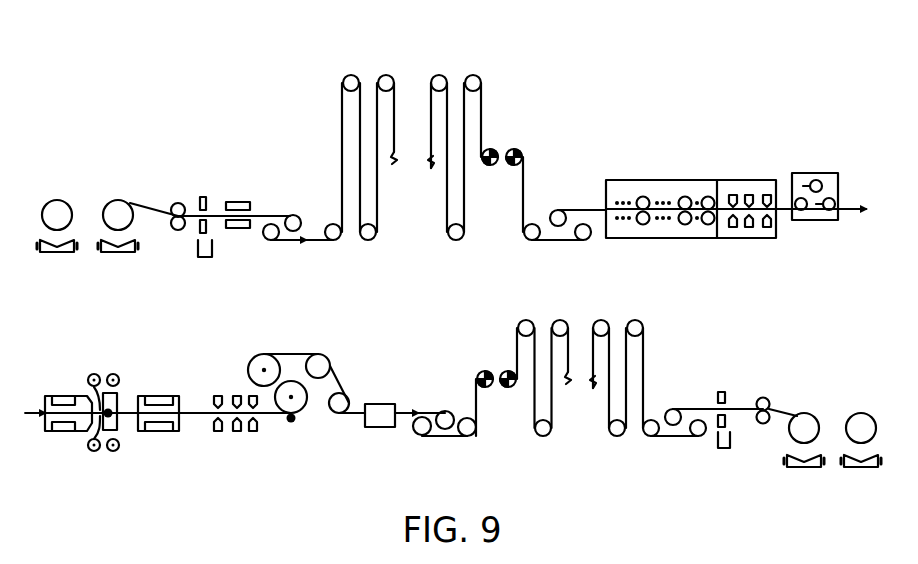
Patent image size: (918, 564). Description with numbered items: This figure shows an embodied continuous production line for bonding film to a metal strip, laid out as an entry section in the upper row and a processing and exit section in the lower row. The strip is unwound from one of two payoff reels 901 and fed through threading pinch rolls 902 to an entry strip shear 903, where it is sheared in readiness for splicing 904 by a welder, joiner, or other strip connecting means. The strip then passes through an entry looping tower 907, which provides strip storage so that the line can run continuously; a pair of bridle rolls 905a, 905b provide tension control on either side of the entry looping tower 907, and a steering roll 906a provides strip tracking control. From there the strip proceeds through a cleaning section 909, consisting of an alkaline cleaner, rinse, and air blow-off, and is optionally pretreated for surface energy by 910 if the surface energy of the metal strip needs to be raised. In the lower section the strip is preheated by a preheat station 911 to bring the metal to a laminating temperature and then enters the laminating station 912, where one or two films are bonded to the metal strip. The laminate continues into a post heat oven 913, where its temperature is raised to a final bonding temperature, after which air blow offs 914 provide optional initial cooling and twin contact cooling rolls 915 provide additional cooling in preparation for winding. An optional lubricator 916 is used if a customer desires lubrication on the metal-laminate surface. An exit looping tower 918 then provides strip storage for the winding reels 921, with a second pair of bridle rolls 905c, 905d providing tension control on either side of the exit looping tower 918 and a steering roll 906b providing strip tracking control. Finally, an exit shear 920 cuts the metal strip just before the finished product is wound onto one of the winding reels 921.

The payoff reels 901 is at (109, 203).
The threading pinch rolls 902 is at (176, 203).
The entry strip shear 903 is at (204, 195).
The splicing 904 is at (238, 200).
The bridle rolls 905a is at (293, 222).
The bridle rolls 905b is at (562, 203).
The bridle rolls 905c is at (437, 402).
The bridle rolls 905d is at (687, 398).
The steering roll 906a is at (511, 150).
The steering roll 906b is at (501, 365).
The entry looping tower 907 is at (343, 72).
The cleaning section 909 is at (677, 170).
The pretreatment for surface energy 910 is at (813, 172).
The preheat station 911 is at (65, 390).
The laminating station 912 is at (102, 362).
The post heat oven 913 is at (158, 390).
The air blow offs 914 is at (232, 390).
The twin contact cooling rolls 915 is at (266, 352).
The lubricator 916 is at (383, 397).
The exit looping tower 918 is at (643, 311).
The exit shear 920 is at (723, 390).
The winding reels 921 is at (843, 415).